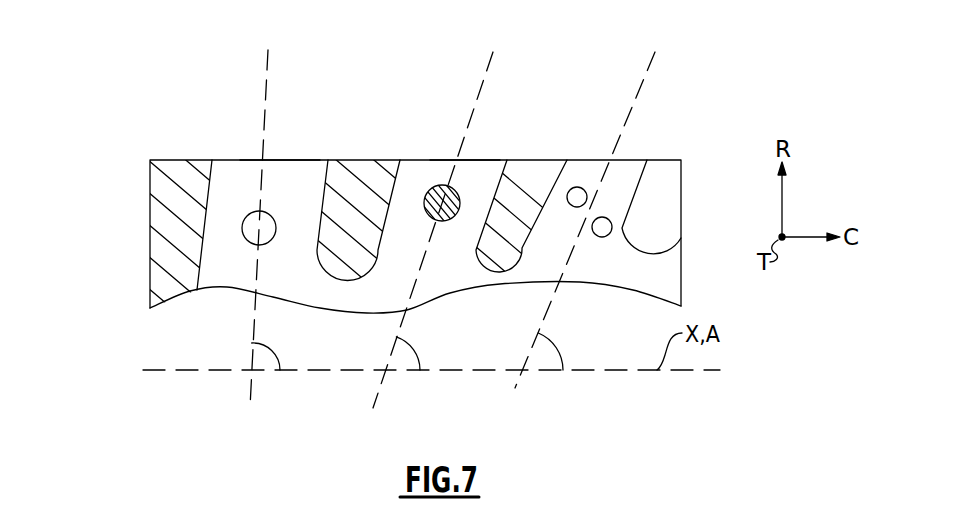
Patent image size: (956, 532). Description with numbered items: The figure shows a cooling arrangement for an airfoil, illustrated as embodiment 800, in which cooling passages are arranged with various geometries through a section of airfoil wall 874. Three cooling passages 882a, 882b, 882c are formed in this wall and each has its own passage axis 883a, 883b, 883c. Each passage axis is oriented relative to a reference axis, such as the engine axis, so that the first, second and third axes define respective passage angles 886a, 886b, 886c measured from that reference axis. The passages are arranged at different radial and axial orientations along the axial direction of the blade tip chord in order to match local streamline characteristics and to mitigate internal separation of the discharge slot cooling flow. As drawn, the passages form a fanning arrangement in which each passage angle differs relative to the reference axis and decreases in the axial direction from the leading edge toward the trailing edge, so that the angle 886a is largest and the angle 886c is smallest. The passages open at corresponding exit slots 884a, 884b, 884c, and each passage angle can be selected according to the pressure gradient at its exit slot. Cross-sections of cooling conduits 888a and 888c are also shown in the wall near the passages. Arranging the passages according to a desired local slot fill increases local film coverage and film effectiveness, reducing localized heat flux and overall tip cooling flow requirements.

The embodiment 800 is at (133, 63).
The stator core 874 is at (104, 128).
The cooling passage 882a is at (231, 178).
The cooling passage 882b is at (405, 173).
The cooling passage 882c is at (572, 172).
The passage axis 883a is at (267, 82).
The passage axis 883b is at (485, 75).
The passage axis 883c is at (643, 83).
The exit slot 884a is at (278, 165).
The exit slot 884b is at (481, 165).
The exit slot 884c is at (630, 165).
The passage angle 886a is at (277, 358).
The passage angle 886b is at (415, 352).
The passage angle 886c is at (558, 350).
The first conductor 888a is at (273, 212).
The third conductors 888c is at (436, 186).